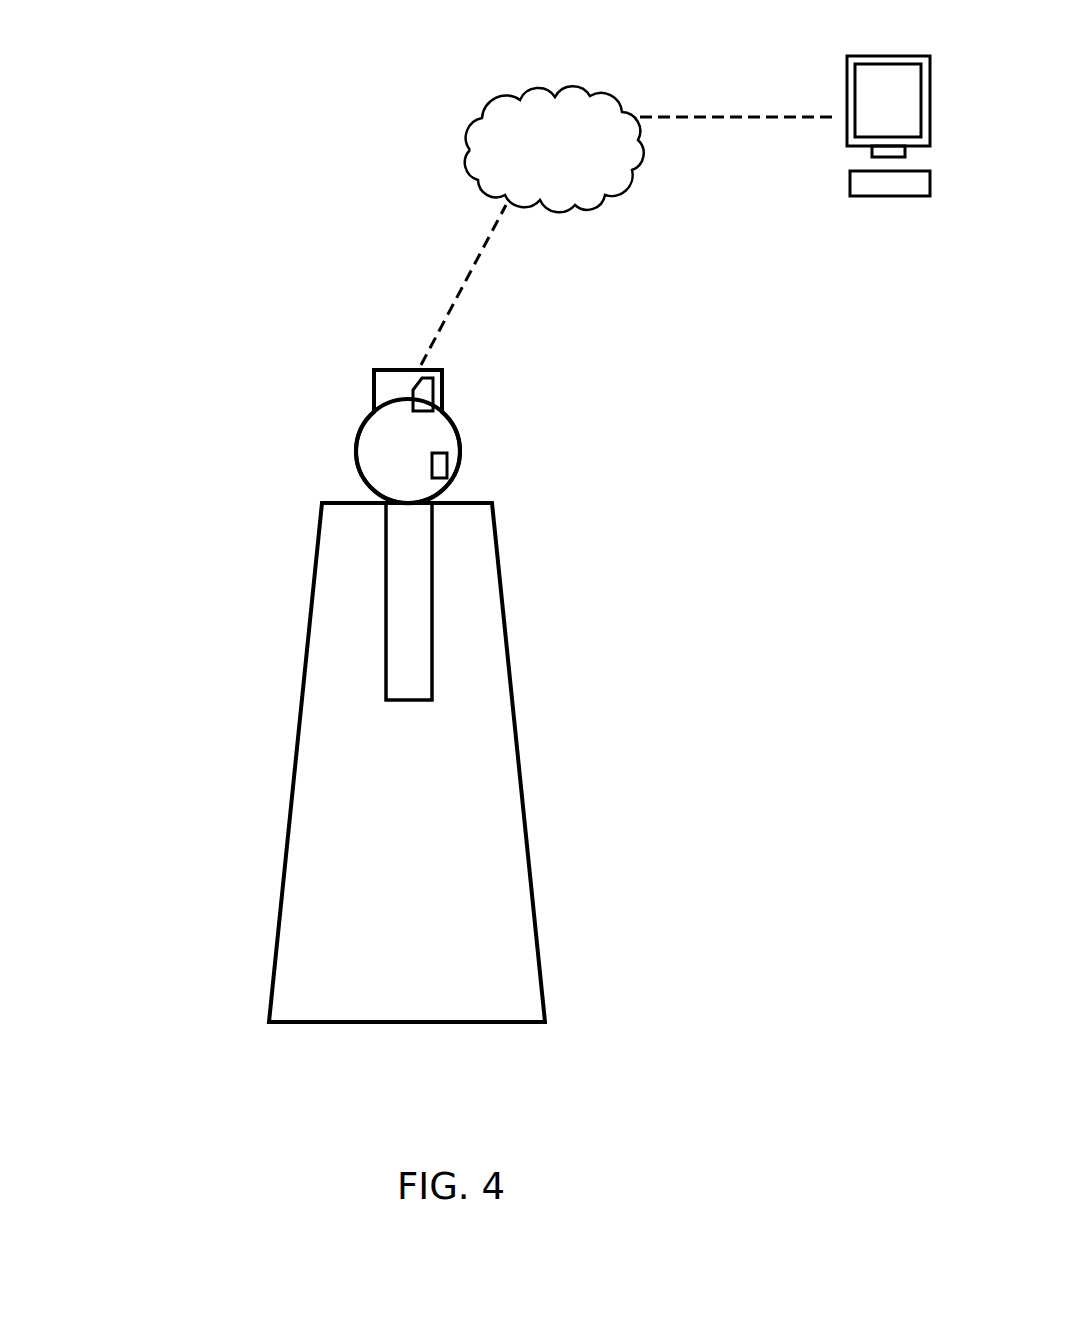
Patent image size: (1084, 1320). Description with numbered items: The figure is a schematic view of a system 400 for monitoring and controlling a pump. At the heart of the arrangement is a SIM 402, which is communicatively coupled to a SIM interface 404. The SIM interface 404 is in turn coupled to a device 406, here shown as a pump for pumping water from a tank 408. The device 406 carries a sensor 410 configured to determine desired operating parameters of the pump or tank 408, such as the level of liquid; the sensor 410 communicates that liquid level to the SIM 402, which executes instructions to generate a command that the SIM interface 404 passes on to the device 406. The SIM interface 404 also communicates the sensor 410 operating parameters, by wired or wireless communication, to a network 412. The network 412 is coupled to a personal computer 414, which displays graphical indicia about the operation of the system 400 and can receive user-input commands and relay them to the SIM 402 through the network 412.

The system 400 is at (661, 581).
The SIM 402 is at (434, 394).
The SIM interface 404 is at (381, 390).
The device 406 is at (388, 472).
The tank 408 is at (326, 700).
The sensor 410 is at (442, 458).
The network 412 is at (613, 128).
The personal computer 414 is at (847, 92).